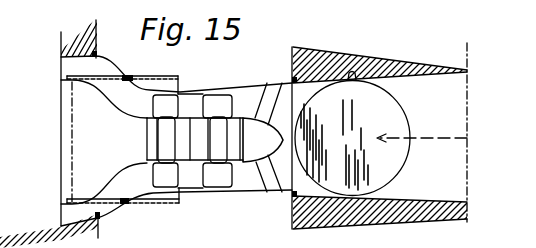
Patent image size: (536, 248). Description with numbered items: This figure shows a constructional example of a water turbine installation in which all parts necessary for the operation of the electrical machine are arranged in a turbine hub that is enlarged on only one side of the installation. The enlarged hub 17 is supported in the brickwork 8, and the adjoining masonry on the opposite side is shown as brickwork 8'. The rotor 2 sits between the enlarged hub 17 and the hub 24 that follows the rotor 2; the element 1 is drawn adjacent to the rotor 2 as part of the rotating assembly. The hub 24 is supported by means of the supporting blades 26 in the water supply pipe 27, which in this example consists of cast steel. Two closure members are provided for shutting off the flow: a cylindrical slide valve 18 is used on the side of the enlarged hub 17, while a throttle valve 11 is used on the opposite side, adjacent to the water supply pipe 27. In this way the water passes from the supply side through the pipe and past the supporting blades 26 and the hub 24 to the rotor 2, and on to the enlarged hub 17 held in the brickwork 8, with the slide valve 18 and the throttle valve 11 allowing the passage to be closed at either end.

The first piston ring 1 is at (195, 141).
The rotor 2 is at (221, 141).
The brickwork 8 is at (88, 39).
The wall 8' is at (386, 137).
The throttle valve 11 is at (381, 138).
The enlarged hub 17 is at (73, 139).
The cylindrical slide valve 18 is at (156, 204).
The hub 24 is at (263, 140).
The supporting blades 26 is at (286, 180).
The water supply pipe 27 is at (247, 84).